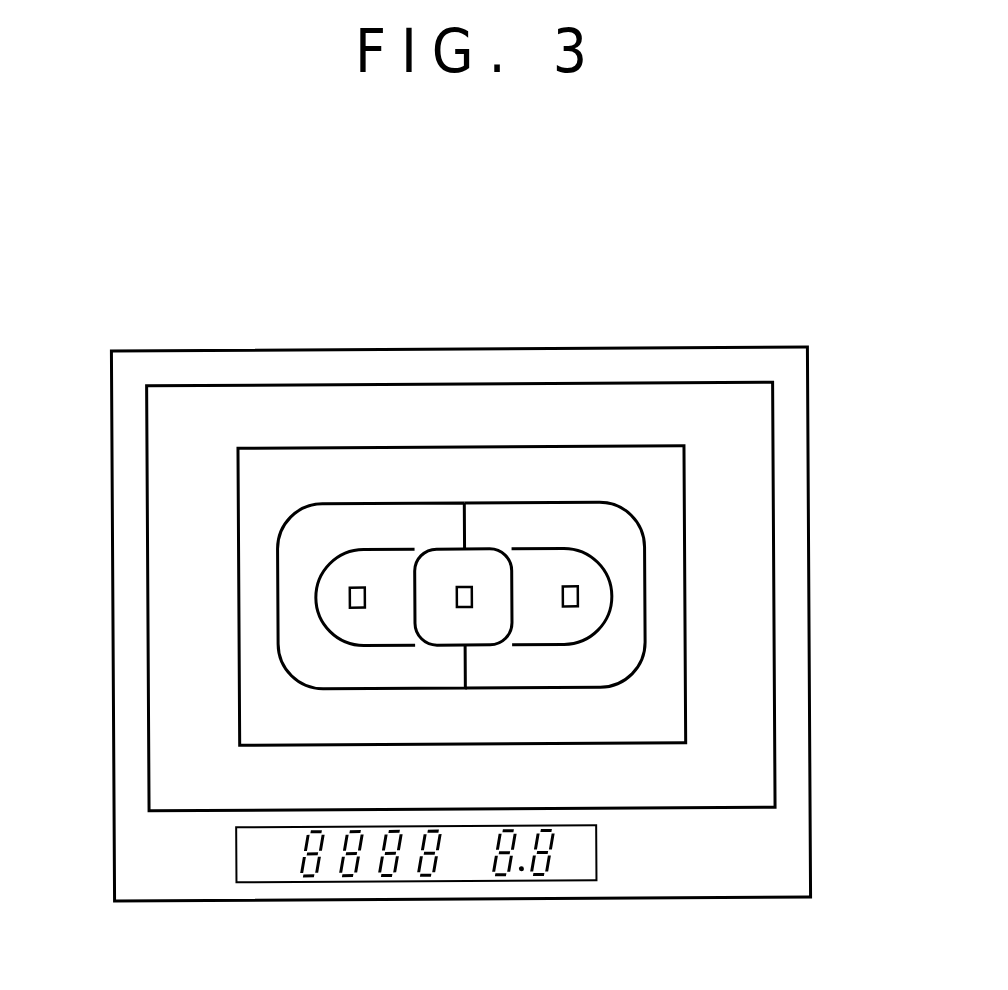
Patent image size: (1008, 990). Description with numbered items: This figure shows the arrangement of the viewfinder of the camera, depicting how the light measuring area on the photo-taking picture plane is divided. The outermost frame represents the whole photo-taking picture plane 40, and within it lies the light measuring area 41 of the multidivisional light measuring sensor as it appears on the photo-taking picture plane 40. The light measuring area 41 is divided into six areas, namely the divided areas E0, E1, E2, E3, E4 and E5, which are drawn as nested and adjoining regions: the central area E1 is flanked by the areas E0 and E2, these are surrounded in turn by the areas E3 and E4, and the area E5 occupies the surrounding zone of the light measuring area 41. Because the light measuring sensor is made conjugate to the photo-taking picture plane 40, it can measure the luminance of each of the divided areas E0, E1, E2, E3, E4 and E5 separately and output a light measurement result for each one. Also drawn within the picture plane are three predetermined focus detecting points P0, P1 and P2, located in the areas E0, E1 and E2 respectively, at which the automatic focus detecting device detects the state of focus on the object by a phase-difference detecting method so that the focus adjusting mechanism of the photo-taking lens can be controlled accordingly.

The photo-taking picture plane 40 is at (758, 493).
The light measuring area 41 is at (642, 462).
The divided area E5 is at (257, 560).
The divided area E3 is at (295, 598).
The divided area E4 is at (588, 670).
The divided area E0 is at (338, 616).
The divided area E1 is at (425, 622).
The divided area E2 is at (583, 623).
The focus detecting point P0 is at (363, 588).
The focus detecting point P1 is at (468, 588).
The focus detecting point P2 is at (570, 588).